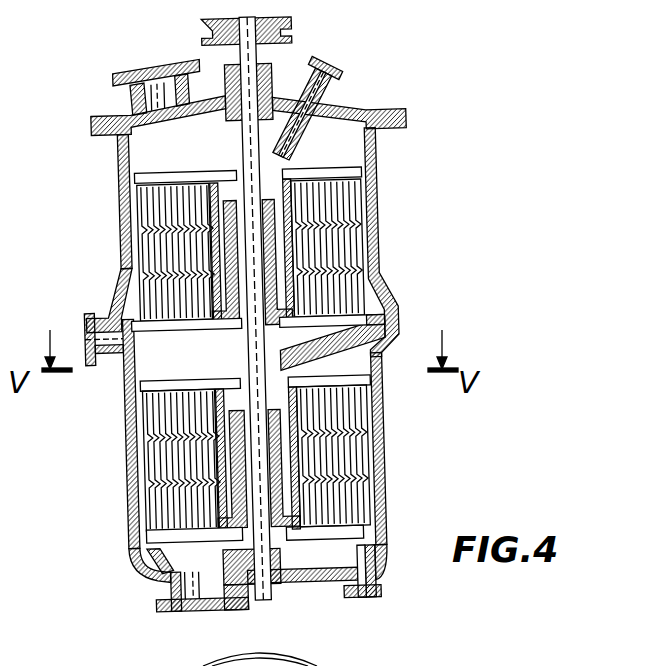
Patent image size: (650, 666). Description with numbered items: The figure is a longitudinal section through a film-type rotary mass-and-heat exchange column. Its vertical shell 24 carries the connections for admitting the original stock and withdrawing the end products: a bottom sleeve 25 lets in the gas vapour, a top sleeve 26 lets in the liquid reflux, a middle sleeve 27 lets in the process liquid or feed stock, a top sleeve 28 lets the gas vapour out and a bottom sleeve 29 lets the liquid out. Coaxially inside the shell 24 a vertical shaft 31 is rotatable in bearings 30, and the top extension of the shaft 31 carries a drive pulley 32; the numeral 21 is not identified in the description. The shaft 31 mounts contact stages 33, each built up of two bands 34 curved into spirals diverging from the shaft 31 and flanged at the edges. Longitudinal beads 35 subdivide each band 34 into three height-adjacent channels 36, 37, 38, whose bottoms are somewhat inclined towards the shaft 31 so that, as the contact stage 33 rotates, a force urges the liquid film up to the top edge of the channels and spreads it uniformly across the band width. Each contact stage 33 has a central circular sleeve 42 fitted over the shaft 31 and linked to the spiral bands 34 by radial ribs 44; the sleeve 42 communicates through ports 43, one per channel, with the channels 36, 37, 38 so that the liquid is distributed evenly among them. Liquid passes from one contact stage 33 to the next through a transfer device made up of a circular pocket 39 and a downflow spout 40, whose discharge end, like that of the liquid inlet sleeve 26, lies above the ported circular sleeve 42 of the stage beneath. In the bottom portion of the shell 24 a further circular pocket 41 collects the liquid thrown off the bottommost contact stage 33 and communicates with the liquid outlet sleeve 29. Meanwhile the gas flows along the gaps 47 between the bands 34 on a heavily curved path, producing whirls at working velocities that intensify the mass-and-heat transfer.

The drive shaft 21 is at (247, 52).
The vertical shell 24 is at (121, 429).
The bottom sleeve 25 is at (153, 612).
The top sleeve 26 is at (360, 68).
The middle sleeve 27 is at (87, 308).
The top sleeve 28 is at (122, 72).
The bottom sleeve 29 is at (369, 597).
The bearings 30 is at (294, 79).
The vertical shaft 31 is at (247, 350).
The drive pulley 32 is at (299, 27).
The contact stage 33 is at (316, 169).
The band 34 is at (369, 254).
The longitudinal bead 35 is at (364, 480).
The channel 36 is at (367, 416).
The channel 37 is at (369, 457).
The channel 38 is at (366, 516).
The circular pocket 39 is at (378, 326).
The downflow spout 40 is at (374, 365).
The circular pocket 41 is at (126, 553).
The central circular sleeve 42 is at (193, 542).
The port 43 is at (364, 560).
The radial rib 44 is at (151, 531).
The gap 47 is at (358, 201).